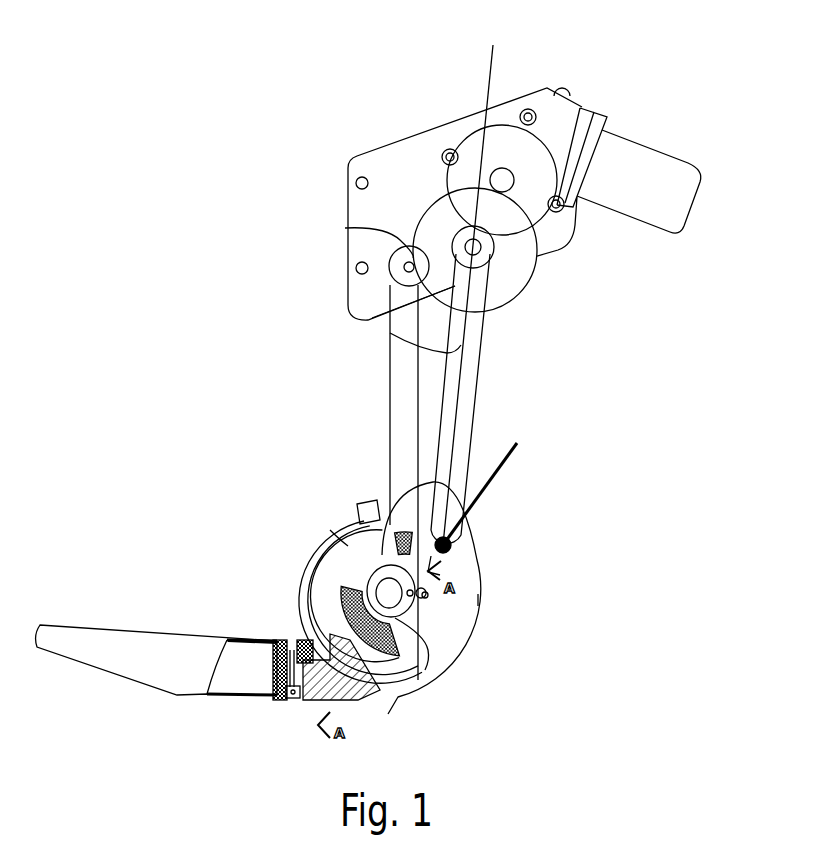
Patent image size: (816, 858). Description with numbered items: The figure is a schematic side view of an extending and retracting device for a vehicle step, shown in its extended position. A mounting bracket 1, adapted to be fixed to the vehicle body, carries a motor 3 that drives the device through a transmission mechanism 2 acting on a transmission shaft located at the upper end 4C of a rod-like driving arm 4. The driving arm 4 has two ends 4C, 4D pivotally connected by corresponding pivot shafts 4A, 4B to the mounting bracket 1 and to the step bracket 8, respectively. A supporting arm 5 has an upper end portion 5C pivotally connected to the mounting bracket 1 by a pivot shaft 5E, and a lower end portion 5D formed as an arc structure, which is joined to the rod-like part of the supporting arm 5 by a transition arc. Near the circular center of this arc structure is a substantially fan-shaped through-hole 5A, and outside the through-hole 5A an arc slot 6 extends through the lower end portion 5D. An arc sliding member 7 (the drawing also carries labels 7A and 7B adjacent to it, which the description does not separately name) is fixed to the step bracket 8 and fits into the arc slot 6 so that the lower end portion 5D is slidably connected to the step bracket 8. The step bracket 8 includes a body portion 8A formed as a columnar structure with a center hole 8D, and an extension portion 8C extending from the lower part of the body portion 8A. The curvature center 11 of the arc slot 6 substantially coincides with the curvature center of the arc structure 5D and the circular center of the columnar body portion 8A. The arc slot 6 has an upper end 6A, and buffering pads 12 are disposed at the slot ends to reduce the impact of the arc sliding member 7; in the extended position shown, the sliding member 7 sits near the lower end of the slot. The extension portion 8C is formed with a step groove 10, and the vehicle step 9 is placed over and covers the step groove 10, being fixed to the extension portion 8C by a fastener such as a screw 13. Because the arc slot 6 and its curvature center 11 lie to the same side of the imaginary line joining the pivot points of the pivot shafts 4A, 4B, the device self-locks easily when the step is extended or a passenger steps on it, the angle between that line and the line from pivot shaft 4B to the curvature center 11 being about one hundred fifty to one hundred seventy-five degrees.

The mounting bracket 1 is at (395, 178).
The transmission mechanism 2 is at (490, 150).
The motor 3 is at (632, 172).
The driving arm 4 is at (483, 362).
The pivot shaft 4A is at (487, 257).
The pivot shaft 4B is at (446, 544).
The upper end of driving arm 4C is at (508, 305).
The end of driving arm 4D is at (452, 545).
The supporting arm 5 is at (400, 452).
The fan-shaped through-hole 5A is at (410, 593).
The upper end portion of supporting arm 5C is at (348, 307).
The lower end portion (arc structure) of supporting arm 5D is at (330, 530).
The pivot shaft 5E is at (355, 228).
The arc slot 6 is at (338, 565).
The upper end of arc slot 6A is at (352, 500).
The arc sliding member 7 is at (337, 600).
The bearing race 7A is at (330, 622).
The bearing seal 7B is at (426, 662).
The step bracket 8 is at (480, 577).
The body portion (columnar structure) 8A is at (423, 594).
The extension portion 8C is at (357, 703).
The center hole 8D is at (425, 595).
The vehicle step 9 is at (153, 667).
The step groove 10 is at (277, 698).
The curvature center of arc slot 11 is at (423, 595).
The buffering pad 12 is at (400, 630).
The screw 13 is at (273, 638).